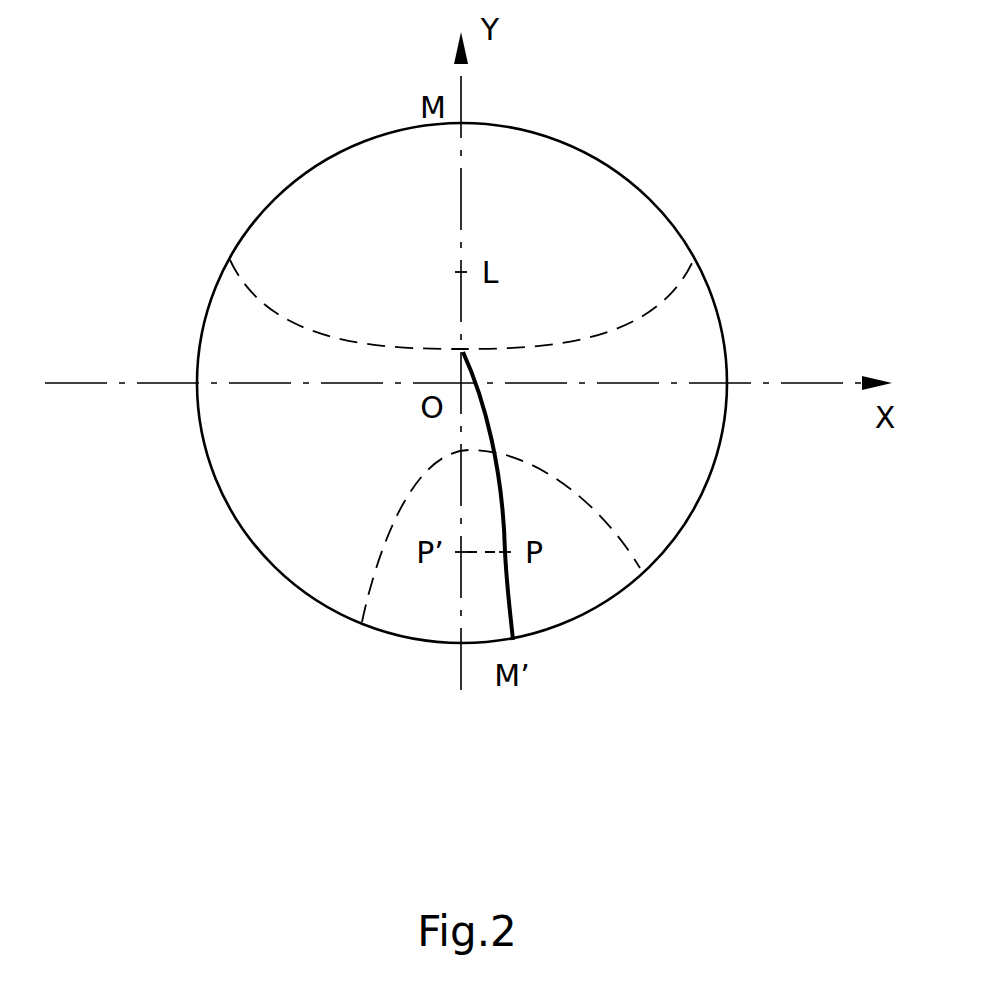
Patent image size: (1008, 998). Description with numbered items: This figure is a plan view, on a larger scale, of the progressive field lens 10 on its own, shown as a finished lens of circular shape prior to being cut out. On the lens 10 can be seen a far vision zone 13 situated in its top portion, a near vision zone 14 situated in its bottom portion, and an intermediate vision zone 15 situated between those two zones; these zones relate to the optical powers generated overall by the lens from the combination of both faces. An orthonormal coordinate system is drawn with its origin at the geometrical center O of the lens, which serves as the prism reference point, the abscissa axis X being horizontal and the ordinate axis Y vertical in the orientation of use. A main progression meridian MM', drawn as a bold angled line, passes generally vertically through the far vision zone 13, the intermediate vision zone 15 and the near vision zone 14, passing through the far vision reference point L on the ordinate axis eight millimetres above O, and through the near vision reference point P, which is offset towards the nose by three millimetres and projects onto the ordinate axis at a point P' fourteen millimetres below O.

The lens 10 is at (200, 543).
The far vision zone 13 is at (640, 212).
The near vision zone 14 is at (395, 600).
The intermediate vision zone 15 is at (683, 495).